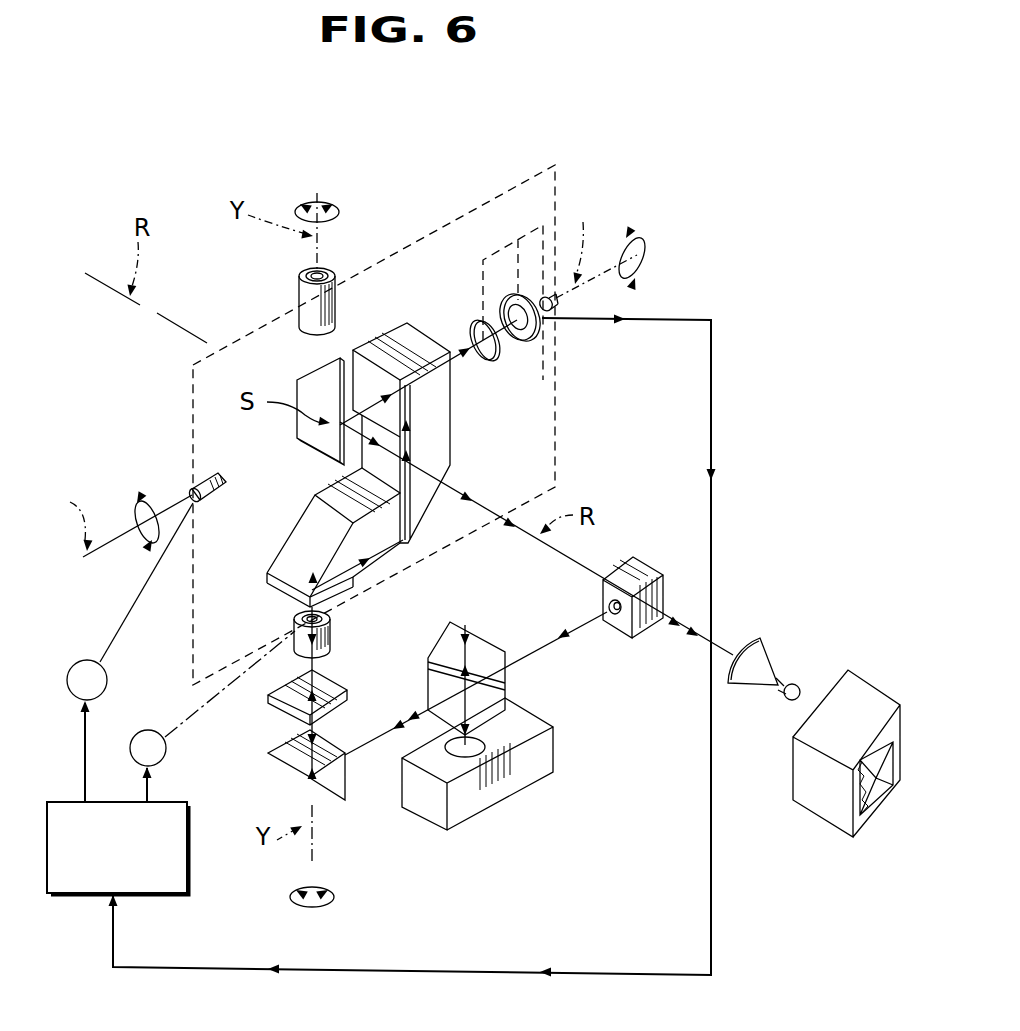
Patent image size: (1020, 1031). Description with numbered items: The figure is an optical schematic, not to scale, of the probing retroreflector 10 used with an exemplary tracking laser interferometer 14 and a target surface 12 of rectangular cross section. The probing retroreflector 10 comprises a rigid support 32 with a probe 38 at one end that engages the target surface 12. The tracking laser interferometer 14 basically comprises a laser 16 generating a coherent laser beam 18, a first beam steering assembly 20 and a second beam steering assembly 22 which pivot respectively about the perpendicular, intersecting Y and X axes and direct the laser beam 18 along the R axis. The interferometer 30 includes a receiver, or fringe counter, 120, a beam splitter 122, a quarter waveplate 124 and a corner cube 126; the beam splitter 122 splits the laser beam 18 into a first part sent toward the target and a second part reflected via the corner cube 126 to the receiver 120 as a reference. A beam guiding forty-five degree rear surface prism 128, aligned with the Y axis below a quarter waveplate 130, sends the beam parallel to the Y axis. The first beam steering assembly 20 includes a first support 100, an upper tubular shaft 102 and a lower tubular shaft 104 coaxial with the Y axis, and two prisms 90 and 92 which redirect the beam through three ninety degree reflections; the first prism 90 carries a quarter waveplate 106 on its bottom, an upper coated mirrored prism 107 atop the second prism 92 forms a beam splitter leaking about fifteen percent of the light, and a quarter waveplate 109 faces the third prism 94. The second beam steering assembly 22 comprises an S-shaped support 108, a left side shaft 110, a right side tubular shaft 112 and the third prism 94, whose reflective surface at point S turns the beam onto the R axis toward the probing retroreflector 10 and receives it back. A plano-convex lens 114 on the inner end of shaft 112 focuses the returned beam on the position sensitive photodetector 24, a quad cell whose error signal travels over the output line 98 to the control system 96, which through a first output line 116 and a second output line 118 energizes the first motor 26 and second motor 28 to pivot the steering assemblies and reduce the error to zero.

The probing retroreflector 10 is at (772, 632).
The target surface 12 is at (880, 800).
The tracking laser interferometer 14 is at (612, 140).
The laser 16 is at (637, 638).
The laser beam 18 is at (583, 618).
The first beam steering assembly 20 is at (578, 450).
The second beam steering assembly 22 is at (282, 380).
The position sensitive photodetector 24 is at (538, 333).
The first motor 26 is at (167, 750).
The second motor 28 is at (77, 660).
The interferometer 30 is at (540, 705).
The rigid support 32 is at (747, 700).
The probe 38 is at (802, 676).
The first prism 90 is at (405, 548).
The second prism 92 is at (453, 442).
The third prism 94 is at (318, 452).
The control system 96 is at (67, 905).
The output line 98 is at (717, 410).
The first support 100 is at (500, 185).
The upper tubular shaft 102 is at (290, 282).
The lower tubular shaft 104 is at (343, 627).
The quarter waveplate 106 is at (275, 593).
The upper coated mirrored prism 107 is at (420, 343).
The S-shaped support 108 is at (440, 272).
The quarter waveplate 109 is at (323, 373).
The left side shaft 110 is at (192, 476).
The right side tubular shaft 112 is at (568, 300).
The plano-convex lens 114 is at (495, 355).
The first output line 116 is at (150, 787).
The second output line 118 is at (83, 735).
The receiver 120 is at (460, 807).
The beam splitter 122 is at (428, 687).
The quarter waveplate 124 is at (505, 657).
The corner cube 126 is at (487, 650).
The beam guiding 45° rear surface prism 128 is at (332, 797).
The quarter waveplate 130 is at (287, 712).